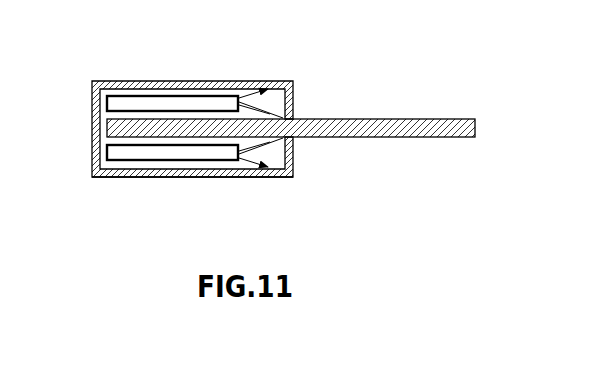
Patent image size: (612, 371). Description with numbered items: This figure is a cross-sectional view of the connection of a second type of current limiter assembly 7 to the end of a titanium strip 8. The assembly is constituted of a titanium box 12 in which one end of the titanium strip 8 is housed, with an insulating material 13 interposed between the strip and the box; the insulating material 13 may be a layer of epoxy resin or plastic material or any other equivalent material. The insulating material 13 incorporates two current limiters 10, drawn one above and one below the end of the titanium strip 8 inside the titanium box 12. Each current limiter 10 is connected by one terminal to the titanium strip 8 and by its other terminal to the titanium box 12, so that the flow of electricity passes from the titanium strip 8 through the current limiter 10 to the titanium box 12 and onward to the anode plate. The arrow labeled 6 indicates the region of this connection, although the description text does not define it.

The sensor assembly 6 is at (276, 126).
The current limiter assembly 7 is at (189, 181).
The titanium strip 8 is at (425, 125).
The current limiter 10 is at (177, 96).
The titanium box 12 is at (228, 81).
The insulating material 13 is at (283, 98).